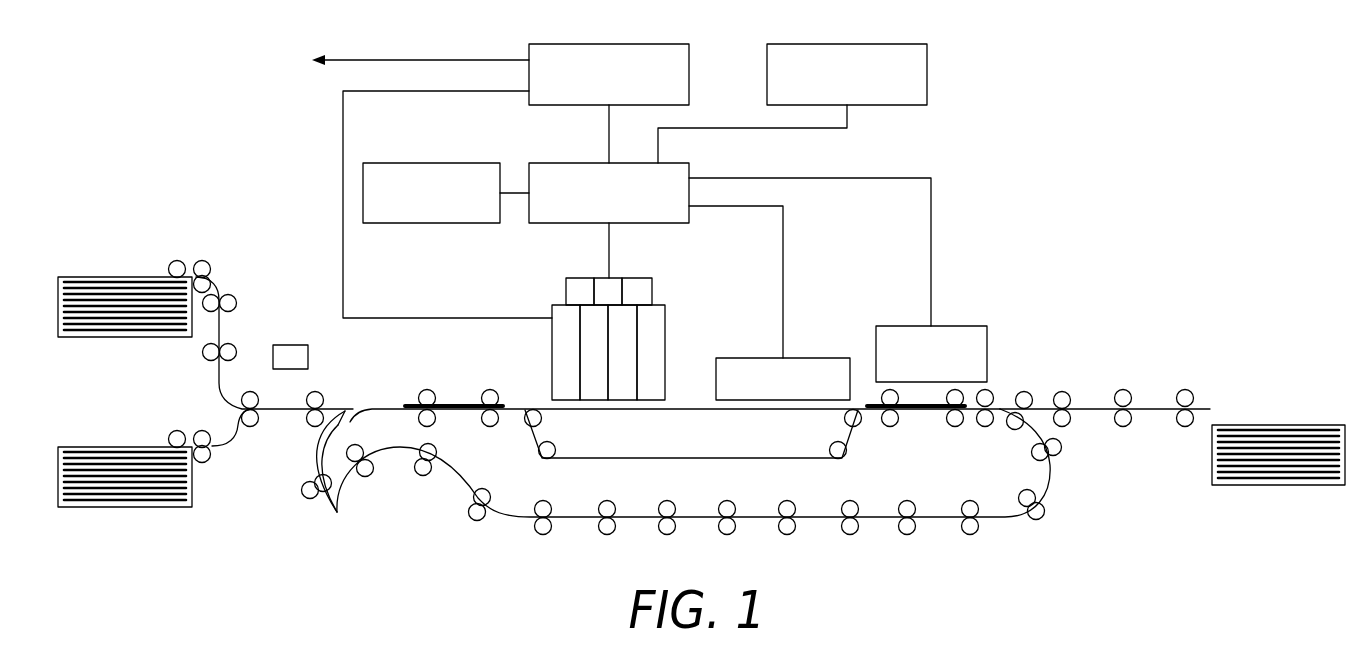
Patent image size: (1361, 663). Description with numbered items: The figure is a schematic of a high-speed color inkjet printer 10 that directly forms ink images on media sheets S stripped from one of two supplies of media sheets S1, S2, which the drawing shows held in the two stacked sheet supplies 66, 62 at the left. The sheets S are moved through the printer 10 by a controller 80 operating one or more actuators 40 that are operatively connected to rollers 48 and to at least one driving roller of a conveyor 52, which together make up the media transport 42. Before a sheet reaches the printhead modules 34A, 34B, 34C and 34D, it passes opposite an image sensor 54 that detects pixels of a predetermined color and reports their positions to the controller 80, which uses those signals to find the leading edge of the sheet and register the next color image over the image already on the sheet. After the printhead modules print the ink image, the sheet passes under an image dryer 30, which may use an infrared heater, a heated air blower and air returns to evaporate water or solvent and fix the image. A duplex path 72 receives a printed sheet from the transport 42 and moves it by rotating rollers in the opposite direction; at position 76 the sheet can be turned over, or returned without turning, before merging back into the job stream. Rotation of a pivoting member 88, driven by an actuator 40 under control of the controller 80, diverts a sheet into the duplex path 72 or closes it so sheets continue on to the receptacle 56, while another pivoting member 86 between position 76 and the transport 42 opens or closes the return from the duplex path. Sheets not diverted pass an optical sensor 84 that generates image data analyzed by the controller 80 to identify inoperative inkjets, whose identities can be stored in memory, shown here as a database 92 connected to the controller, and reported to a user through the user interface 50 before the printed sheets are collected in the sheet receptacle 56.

The color inkjet printer 10 is at (990, 190).
The image dryer 30 is at (807, 357).
The printhead module 34A is at (552, 340).
The printhead module 34B is at (591, 303).
The printhead module 34C is at (628, 303).
The printhead module 34D is at (665, 343).
The actuators 40 is at (689, 76).
The media transport 42 is at (1030, 380).
The rollers 48 is at (236, 347).
The user interface 50 is at (438, 163).
The conveyor 52 is at (850, 462).
The image sensor 54 is at (308, 357).
The sheet receptacle 56 is at (1278, 485).
The sheet supply tray 62 is at (127, 507).
The sheet supply tray 66 is at (127, 337).
The duplex path 72 is at (945, 530).
The position in duplex path 76 is at (330, 517).
The controller 80 is at (560, 163).
The optical sensor 84 is at (965, 325).
The pivoting member 86 is at (368, 413).
The pivoting member 88 is at (1044, 418).
The database 92 is at (927, 78).
The media sheets S is at (457, 400).
The supply of media sheets S1 is at (125, 277).
The supply of media sheets S2 is at (125, 447).